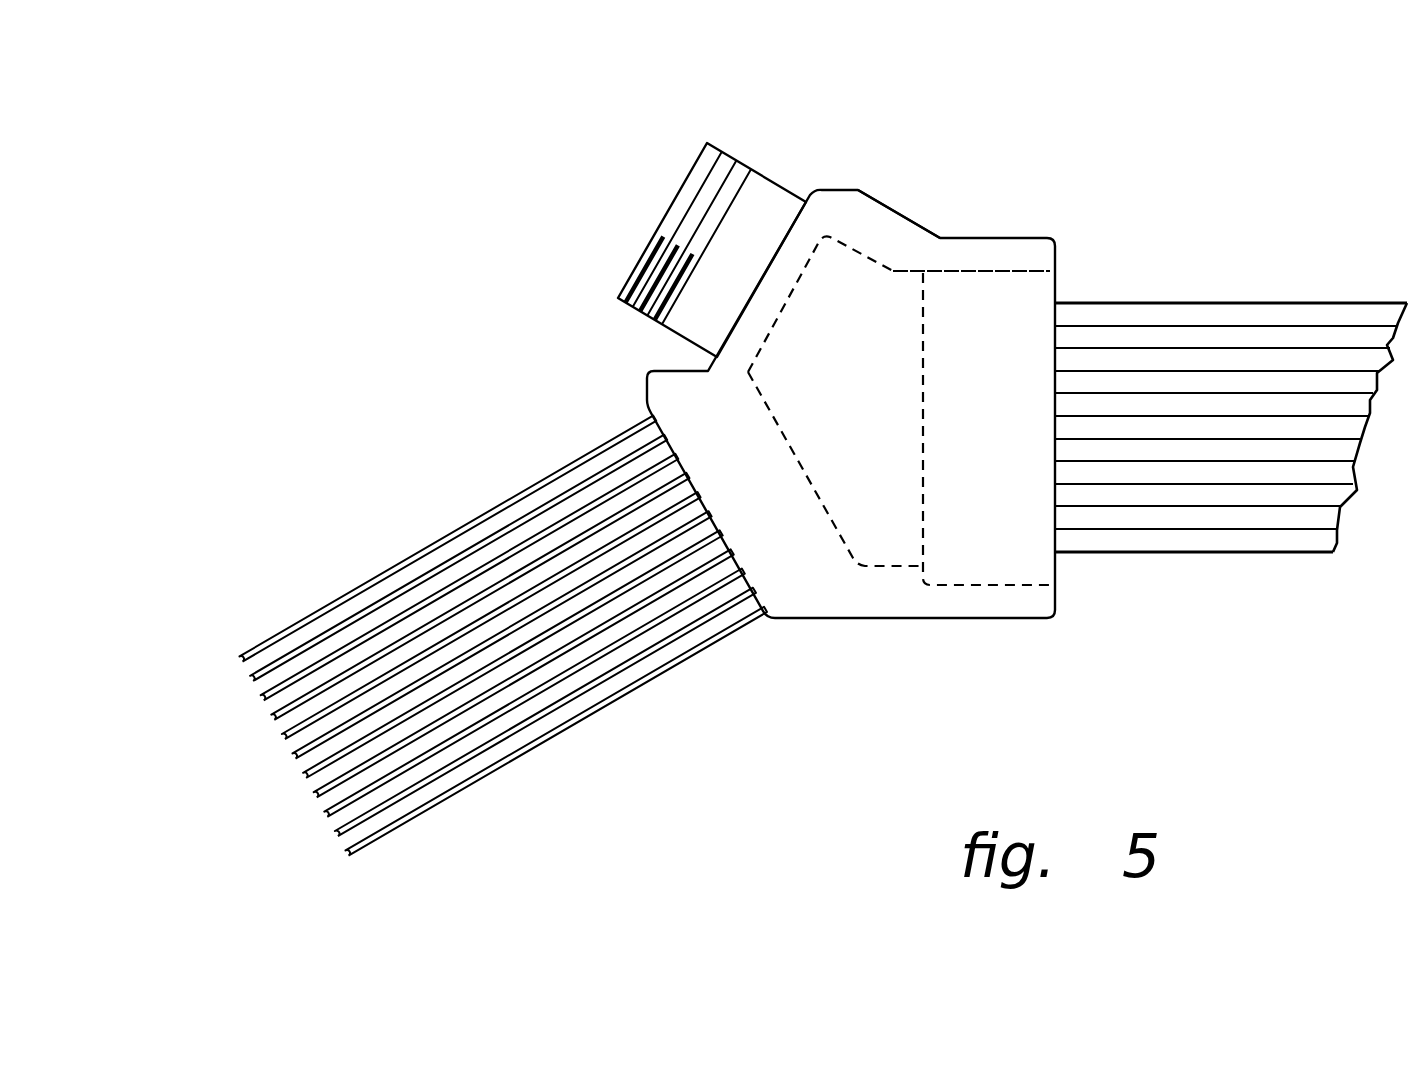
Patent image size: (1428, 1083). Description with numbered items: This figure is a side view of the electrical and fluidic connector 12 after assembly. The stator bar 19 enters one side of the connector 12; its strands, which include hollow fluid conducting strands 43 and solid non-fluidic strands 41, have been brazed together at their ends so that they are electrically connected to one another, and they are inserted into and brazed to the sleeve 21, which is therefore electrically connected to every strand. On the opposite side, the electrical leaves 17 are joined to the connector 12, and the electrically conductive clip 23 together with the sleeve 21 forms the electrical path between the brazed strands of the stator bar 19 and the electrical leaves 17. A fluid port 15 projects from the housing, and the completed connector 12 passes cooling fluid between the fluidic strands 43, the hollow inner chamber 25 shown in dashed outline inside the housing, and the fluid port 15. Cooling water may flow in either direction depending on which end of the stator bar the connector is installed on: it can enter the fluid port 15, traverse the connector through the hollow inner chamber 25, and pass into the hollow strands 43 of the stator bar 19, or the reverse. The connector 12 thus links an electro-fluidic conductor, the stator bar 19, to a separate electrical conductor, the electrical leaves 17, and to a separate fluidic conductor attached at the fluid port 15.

The connector 12 is at (780, 627).
The fluid port 15 is at (770, 178).
The electrical leaves 17 is at (547, 735).
The stator bar 19 is at (1231, 426).
The sleeve 21 is at (1017, 273).
The clip 23 is at (902, 210).
The hollow inner chamber 25 is at (893, 485).
The solid strands 41 is at (1172, 542).
The hollow fluid conducting strands 43 is at (1240, 517).